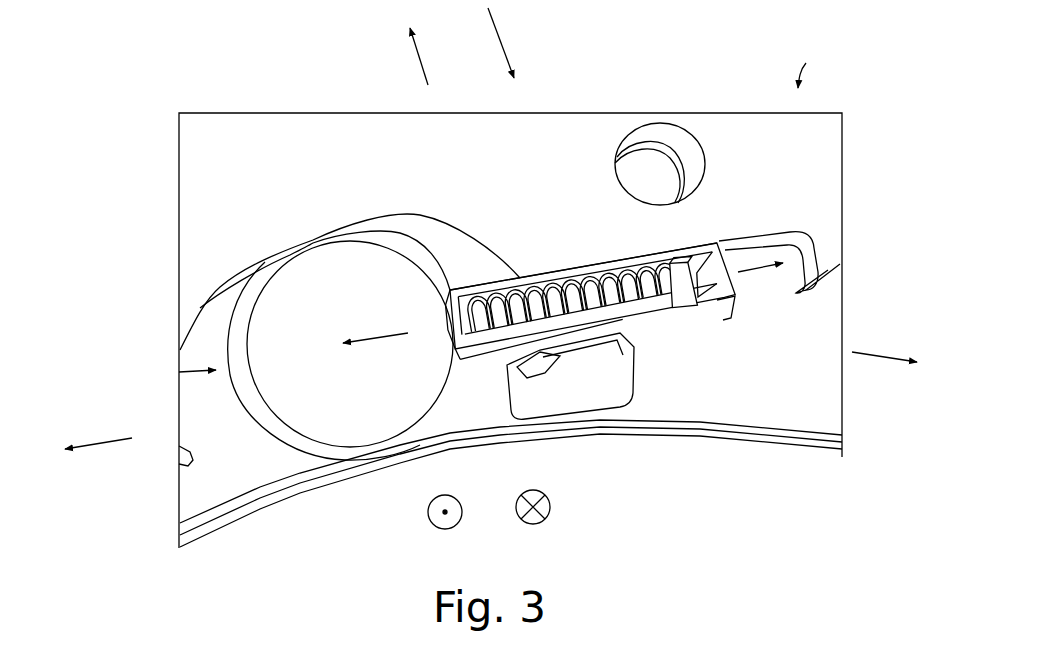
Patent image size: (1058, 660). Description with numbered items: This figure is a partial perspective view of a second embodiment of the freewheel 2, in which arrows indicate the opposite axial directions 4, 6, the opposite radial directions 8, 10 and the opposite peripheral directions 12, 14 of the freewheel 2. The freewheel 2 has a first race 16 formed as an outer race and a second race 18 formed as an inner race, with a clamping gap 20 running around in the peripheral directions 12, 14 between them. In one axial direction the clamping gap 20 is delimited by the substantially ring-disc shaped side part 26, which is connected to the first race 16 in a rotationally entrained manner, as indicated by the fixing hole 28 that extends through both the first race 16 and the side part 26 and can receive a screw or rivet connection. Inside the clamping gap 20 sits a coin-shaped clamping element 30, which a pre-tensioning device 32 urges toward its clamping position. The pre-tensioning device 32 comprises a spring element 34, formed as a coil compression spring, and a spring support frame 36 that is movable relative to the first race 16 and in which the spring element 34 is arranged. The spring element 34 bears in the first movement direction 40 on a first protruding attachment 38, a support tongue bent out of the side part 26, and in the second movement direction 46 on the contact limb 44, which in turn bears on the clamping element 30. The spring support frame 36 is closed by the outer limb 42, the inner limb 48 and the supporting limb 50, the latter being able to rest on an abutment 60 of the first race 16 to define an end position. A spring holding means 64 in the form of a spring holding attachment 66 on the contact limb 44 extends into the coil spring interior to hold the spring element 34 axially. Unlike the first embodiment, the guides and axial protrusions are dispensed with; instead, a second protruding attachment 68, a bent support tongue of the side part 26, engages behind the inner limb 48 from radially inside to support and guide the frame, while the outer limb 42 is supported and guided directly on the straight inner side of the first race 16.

The freewheel 2 is at (806, 63).
The axial direction 4 is at (428, 512).
The axial direction 6 is at (517, 513).
The radial direction 8 is at (416, 47).
The radial direction 10 is at (496, 20).
The peripheral direction 12 is at (93, 445).
The peripheral direction 14 is at (885, 365).
The first race 16 is at (592, 157).
The second race 18 is at (711, 330).
The clamping gap 20 is at (179, 372).
The side part 26 is at (823, 407).
The fixing hole 28 is at (655, 172).
The clamping element 30 is at (304, 263).
The pre-tensioning device 32 is at (511, 309).
The spring element 34 is at (635, 258).
The spring support frame 36 is at (715, 397).
The first protruding attachment 38 is at (680, 258).
The first movement direction 40 is at (762, 271).
The outer limb 42 is at (585, 266).
The contact limb 44 is at (442, 298).
The second movement direction 46 is at (373, 340).
The inner limb 48 is at (633, 320).
The supporting limb 50 is at (752, 262).
The abutment 60 is at (827, 252).
The spring holding means 64 is at (505, 280).
The spring holding attachment 66 is at (705, 274).
The second protruding attachment 68 is at (557, 353).